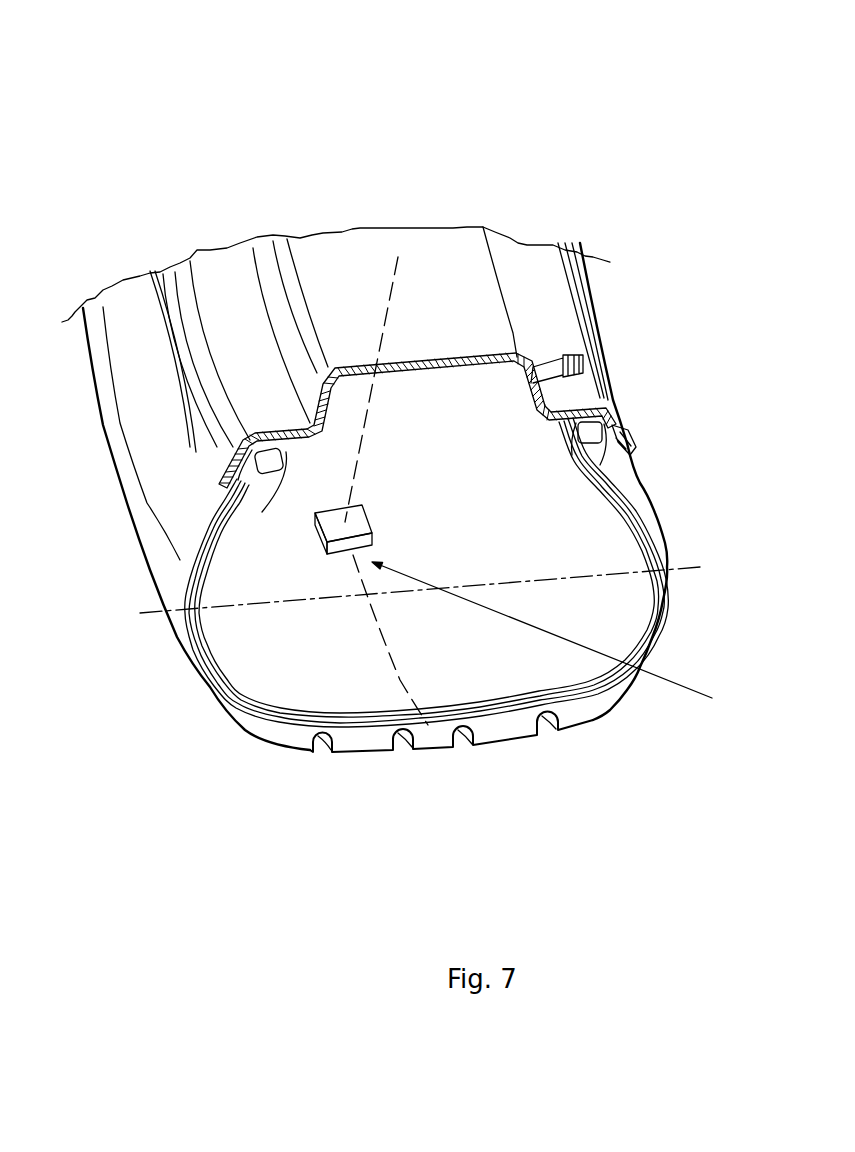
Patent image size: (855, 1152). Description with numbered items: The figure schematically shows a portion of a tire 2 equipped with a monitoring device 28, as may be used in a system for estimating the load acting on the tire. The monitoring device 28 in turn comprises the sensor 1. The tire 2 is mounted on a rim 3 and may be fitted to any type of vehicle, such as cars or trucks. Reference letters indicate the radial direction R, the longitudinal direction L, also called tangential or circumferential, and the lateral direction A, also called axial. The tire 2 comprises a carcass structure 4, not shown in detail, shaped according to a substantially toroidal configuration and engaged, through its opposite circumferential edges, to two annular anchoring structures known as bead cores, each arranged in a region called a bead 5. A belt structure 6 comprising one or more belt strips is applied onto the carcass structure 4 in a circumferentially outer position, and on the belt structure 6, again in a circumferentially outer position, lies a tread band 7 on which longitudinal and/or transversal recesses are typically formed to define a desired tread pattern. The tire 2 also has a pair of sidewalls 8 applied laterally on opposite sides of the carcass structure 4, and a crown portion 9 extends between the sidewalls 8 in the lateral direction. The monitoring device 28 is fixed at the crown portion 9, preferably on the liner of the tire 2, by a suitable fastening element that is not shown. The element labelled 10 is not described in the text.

The sensor 1 is at (390, 530).
The monitoring device 28 is at (395, 513).
The tire 2 is at (401, 452).
The rim 3 is at (348, 258).
The carcass structure 4 is at (657, 523).
The bead 5 is at (250, 458).
The belt structure 6 is at (451, 803).
The tread band 7 is at (514, 756).
The sidewalls 8 is at (195, 577).
The crown portion 9 is at (553, 637).
The rim flange 10 is at (213, 470).
The radial direction R is at (398, 283).
The lateral direction A is at (513, 580).
The longitudinal direction L is at (390, 643).